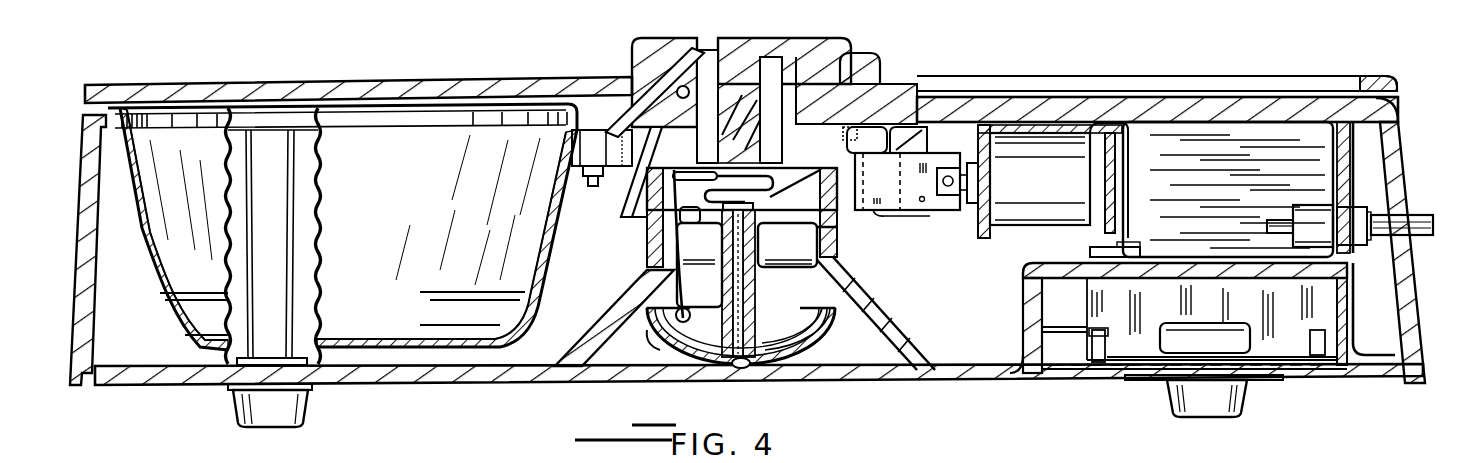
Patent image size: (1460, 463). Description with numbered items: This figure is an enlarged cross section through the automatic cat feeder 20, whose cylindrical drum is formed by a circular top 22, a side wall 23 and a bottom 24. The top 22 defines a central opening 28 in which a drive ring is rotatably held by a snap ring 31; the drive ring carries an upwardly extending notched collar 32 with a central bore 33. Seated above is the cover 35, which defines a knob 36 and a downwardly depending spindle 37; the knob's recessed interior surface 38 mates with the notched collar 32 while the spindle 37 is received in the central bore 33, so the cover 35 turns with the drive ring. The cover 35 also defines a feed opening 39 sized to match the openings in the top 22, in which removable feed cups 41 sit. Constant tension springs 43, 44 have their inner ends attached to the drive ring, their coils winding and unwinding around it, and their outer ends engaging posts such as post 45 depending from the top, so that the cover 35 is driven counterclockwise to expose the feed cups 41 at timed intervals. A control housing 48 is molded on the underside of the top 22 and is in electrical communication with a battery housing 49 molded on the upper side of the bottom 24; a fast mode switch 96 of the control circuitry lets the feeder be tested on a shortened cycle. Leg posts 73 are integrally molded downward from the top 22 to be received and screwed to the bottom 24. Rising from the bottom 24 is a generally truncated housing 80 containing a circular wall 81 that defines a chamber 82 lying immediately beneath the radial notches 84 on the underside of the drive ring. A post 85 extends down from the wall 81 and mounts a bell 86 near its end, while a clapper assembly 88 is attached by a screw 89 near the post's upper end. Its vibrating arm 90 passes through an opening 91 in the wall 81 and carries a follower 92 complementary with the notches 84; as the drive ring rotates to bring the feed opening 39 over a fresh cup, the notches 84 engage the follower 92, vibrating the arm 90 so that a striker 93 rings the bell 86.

The cat feeder 20 is at (730, 271).
The circular top 22 is at (990, 97).
The side wall 23 is at (78, 236).
The bottom 24 is at (404, 385).
The central opening 28 is at (640, 66).
The snap ring 31 is at (858, 72).
The notched collar 32 is at (851, 40).
The central bore 33 is at (708, 48).
The cover 35 is at (340, 82).
The knob 36 is at (748, 38).
The spindle 37 is at (710, 140).
The recessed interior surface 38 is at (668, 44).
The feed opening 39 is at (1352, 75).
The feed cups 41 is at (526, 240).
The constant tension spring 43 is at (572, 138).
The constant tension spring 44 is at (912, 171).
The post 45 is at (576, 164).
The control housing 48 is at (1370, 142).
The battery housing 49 is at (1357, 322).
The leg posts 73 is at (246, 340).
The truncated housing 80 is at (846, 254).
The circular wall 81 is at (769, 283).
The chamber 82 is at (784, 209).
The radial notches 84 is at (774, 168).
The post 85 is at (802, 348).
The bell 86 is at (807, 318).
The clapper assembly 88 is at (655, 273).
The screw 89 is at (842, 138).
The vibrating arm 90 is at (699, 257).
The opening 91 is at (668, 228).
The follower 92 is at (726, 158).
The striker 93 is at (656, 333).
The fast mode switch 96 is at (1417, 213).